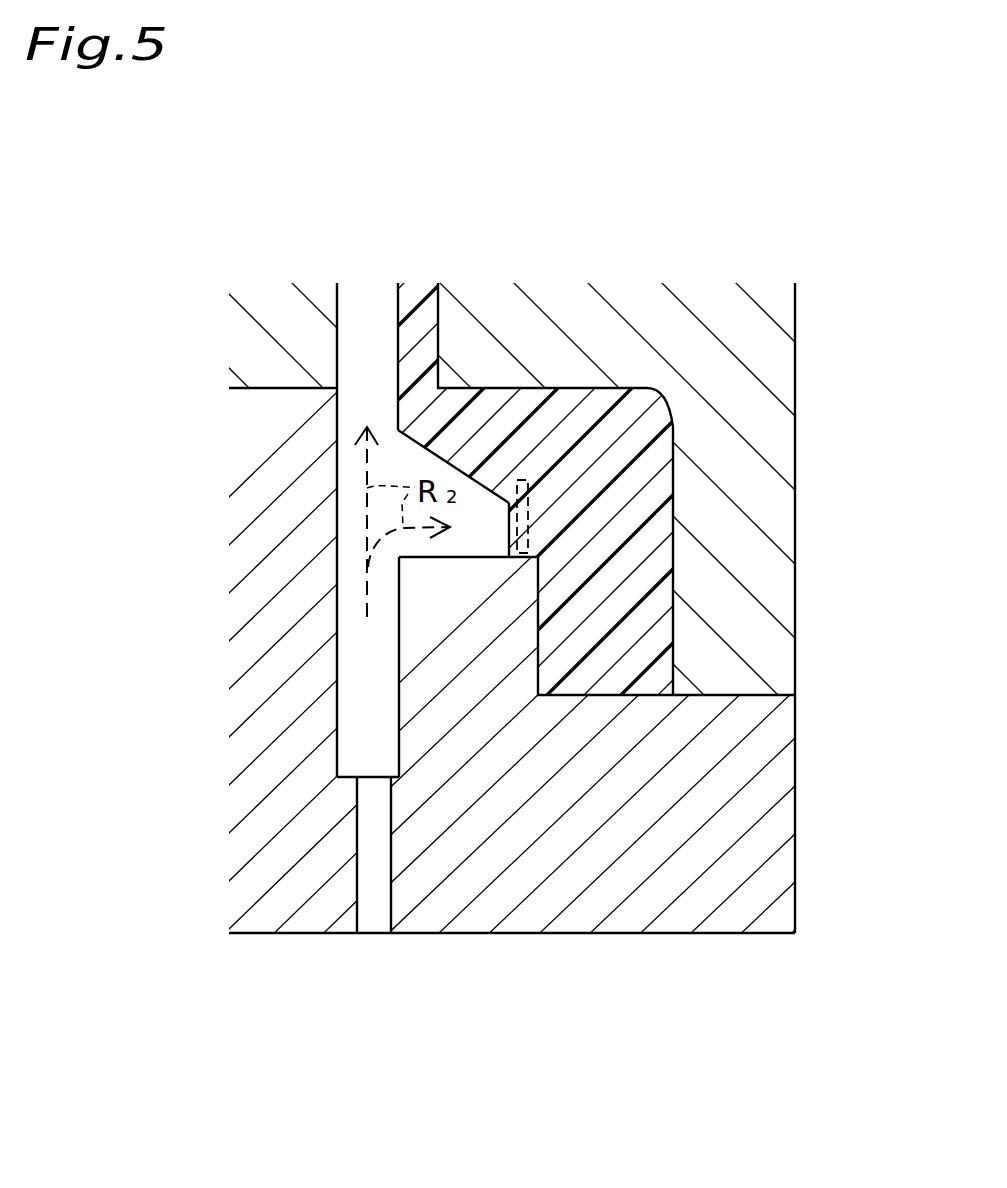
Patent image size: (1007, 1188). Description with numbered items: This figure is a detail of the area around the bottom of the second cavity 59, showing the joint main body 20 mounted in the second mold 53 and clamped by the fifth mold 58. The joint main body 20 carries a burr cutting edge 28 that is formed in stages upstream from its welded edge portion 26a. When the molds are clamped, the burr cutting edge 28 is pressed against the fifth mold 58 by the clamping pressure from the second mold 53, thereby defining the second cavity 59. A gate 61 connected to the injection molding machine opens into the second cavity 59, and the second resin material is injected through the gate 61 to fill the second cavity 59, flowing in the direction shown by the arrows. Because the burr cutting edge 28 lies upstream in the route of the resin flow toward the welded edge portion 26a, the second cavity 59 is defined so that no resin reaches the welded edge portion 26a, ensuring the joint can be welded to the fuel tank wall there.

The second mold 53 is at (770, 367).
The joint main body 20 is at (648, 427).
The burr cutting edge 28 is at (532, 548).
The welded edge portion 26a is at (630, 663).
The fifth mold 58 is at (770, 828).
The gate 61 is at (373, 905).
The second cavity 59 is at (415, 465).